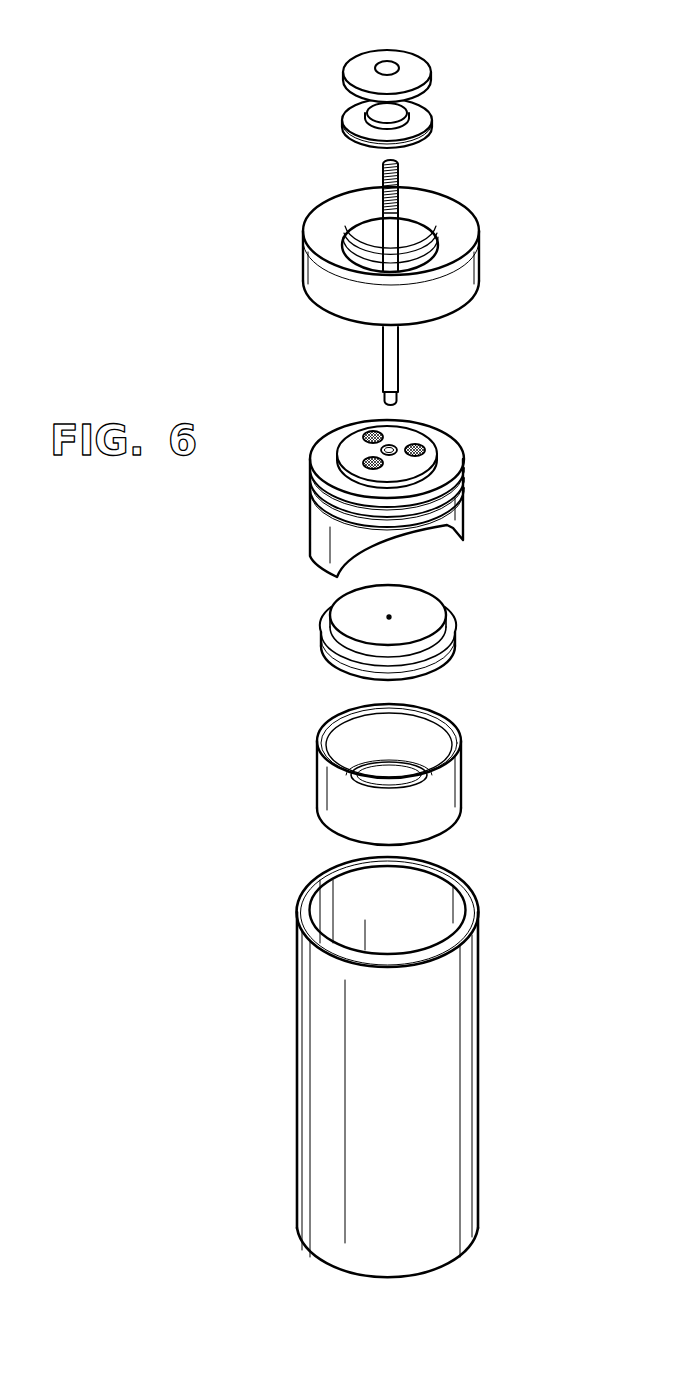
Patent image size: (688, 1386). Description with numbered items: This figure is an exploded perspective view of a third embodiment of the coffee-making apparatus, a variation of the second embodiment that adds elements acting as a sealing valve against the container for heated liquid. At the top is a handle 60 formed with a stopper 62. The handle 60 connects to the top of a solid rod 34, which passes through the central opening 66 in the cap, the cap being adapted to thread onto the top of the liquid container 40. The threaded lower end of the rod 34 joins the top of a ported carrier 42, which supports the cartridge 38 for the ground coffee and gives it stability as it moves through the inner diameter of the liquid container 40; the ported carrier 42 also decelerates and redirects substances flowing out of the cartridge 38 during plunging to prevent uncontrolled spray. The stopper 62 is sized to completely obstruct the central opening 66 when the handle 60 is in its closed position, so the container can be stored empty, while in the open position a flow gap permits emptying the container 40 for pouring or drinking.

The solid rod 34 is at (398, 352).
The cartridge 38 is at (460, 745).
The liquid container 40 is at (478, 957).
The ported carrier 42 is at (470, 472).
The handle 60 is at (427, 58).
The stopper 62 is at (433, 105).
The central opening 66 is at (422, 228).